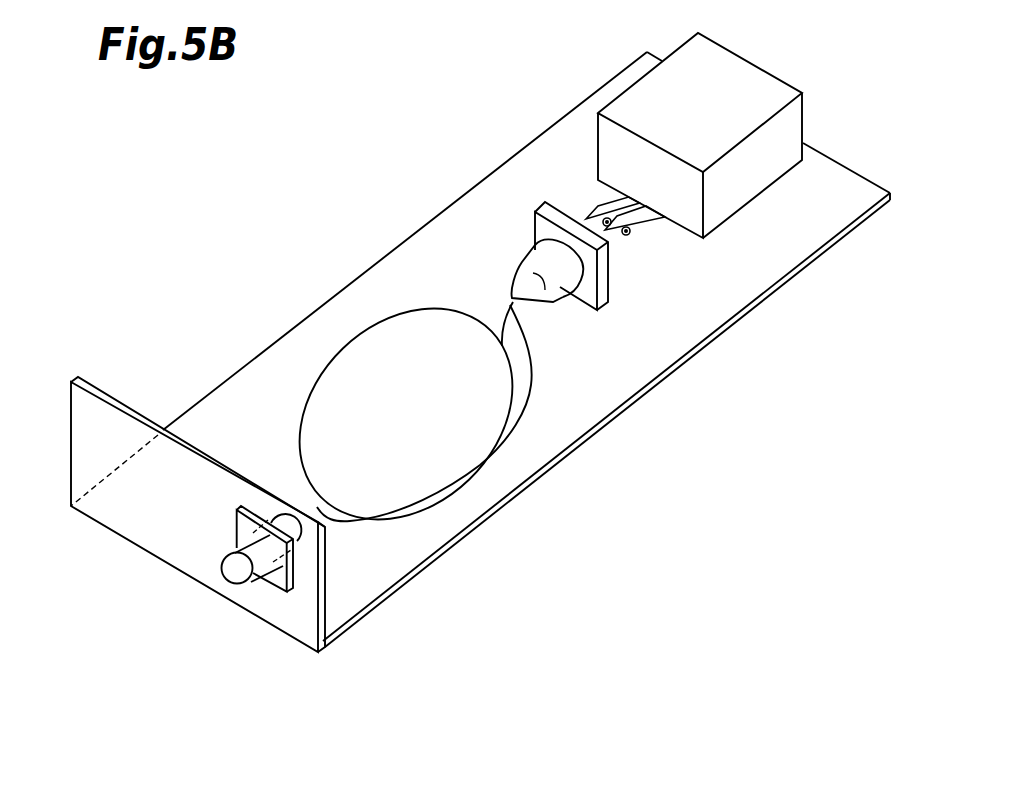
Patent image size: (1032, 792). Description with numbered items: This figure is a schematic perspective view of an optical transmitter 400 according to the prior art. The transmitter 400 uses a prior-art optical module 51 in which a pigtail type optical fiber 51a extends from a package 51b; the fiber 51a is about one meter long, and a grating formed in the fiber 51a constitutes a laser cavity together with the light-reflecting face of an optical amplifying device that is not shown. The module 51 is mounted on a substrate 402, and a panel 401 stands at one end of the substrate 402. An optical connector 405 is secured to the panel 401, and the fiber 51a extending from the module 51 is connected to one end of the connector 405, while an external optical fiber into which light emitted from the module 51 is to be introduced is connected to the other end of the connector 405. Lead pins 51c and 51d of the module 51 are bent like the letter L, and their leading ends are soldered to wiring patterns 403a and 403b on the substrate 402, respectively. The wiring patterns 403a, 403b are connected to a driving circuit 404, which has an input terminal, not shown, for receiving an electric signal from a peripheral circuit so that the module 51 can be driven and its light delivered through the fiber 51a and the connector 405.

The optical transmitter 400 is at (310, 130).
The panel 401 is at (313, 598).
The substrate 402 is at (737, 288).
The wiring pattern 403a is at (623, 207).
The wiring pattern 403b is at (655, 217).
The driving circuit 404 is at (752, 92).
The optical connector 405 is at (257, 580).
The optical module 51 is at (523, 198).
The pigtail type optical fiber 51a is at (360, 342).
The package 51b is at (563, 305).
The lead pin 51c is at (590, 210).
The lead pin 51d is at (652, 166).